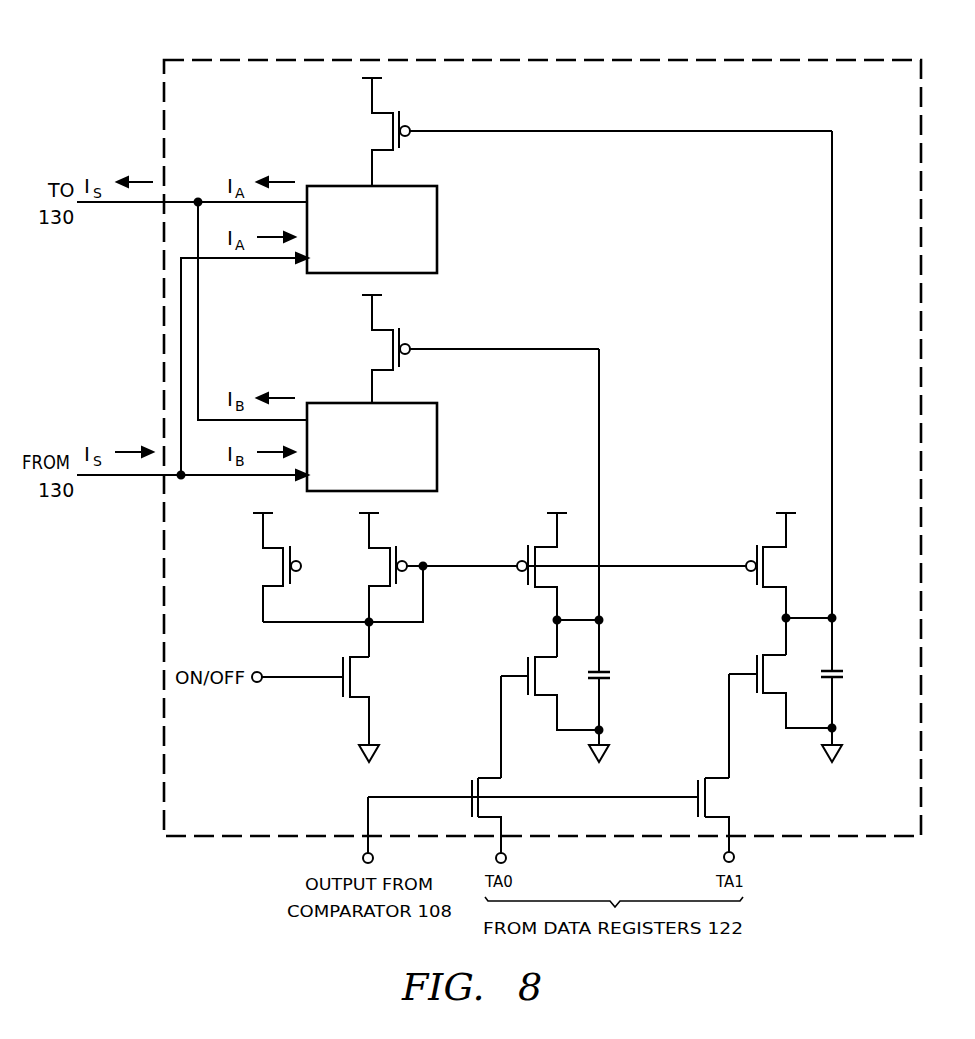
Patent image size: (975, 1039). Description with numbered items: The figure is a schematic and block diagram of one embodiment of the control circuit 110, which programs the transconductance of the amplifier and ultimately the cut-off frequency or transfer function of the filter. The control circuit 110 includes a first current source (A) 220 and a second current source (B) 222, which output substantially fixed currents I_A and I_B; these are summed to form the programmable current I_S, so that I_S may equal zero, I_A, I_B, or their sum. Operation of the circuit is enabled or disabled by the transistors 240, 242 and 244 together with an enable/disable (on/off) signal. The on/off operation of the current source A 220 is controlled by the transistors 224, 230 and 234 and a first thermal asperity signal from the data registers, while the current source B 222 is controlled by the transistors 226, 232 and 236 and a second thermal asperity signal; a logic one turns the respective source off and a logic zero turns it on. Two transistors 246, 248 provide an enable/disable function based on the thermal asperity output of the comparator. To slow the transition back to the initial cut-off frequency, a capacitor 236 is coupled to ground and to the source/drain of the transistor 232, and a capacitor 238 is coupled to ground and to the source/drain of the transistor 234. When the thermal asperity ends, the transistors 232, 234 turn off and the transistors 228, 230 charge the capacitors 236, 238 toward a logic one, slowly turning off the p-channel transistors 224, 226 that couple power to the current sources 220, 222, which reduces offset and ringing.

The control circuit 110 is at (790, 60).
The first current source (A) 220 is at (438, 230).
The second current source (B) 222 is at (438, 449).
The p-channel transistor 224 is at (403, 120).
The p-channel transistor 226 is at (403, 338).
The transistor 228 is at (522, 580).
The transistor 230 is at (755, 553).
The transistor 232 is at (528, 665).
The transistor 234 is at (757, 665).
The capacitor 236 is at (612, 677).
The capacitor 238 is at (845, 677).
The transistor 240 is at (298, 557).
The transistor 242 is at (405, 557).
The transistor 244 is at (340, 690).
The transistor 246 is at (470, 785).
The transistor 248 is at (697, 783).